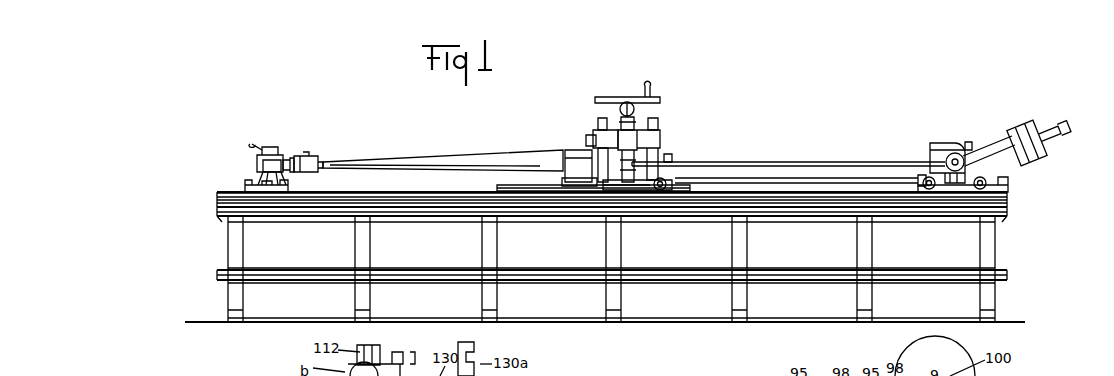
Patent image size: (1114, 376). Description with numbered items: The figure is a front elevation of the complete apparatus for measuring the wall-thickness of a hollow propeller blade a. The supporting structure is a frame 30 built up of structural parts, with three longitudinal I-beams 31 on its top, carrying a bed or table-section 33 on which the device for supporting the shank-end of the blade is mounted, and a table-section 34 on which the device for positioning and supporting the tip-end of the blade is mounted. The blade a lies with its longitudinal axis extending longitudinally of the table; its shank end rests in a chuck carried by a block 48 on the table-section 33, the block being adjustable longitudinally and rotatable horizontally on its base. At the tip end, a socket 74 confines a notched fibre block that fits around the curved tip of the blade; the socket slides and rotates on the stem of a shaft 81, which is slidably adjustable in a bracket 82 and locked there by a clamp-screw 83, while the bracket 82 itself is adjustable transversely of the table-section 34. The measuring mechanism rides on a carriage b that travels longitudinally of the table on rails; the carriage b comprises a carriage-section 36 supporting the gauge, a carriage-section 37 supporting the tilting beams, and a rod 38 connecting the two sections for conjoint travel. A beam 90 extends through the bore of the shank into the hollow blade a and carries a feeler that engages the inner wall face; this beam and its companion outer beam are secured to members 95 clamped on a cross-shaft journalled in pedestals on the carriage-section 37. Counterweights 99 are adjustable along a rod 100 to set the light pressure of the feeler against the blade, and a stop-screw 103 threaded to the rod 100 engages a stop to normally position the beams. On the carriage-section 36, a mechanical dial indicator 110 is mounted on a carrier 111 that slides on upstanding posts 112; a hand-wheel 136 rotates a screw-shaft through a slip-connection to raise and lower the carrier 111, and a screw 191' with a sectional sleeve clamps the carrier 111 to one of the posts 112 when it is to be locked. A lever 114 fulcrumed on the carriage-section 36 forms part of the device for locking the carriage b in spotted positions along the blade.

The frame 30 is at (585, 208).
The longitudinal I-beams 31 is at (668, 202).
The table-section 33 is at (545, 189).
The table-section 34 is at (236, 194).
The carriage-section 36 is at (630, 192).
The carriage-section 37 is at (943, 185).
The rod 38 is at (810, 180).
The block 48 is at (582, 173).
The socket 74 is at (307, 160).
The shaft 81 is at (285, 160).
The bracket 82 is at (262, 180).
The clamp-screw 83 is at (262, 149).
The beam 90 is at (737, 161).
The members 95 is at (956, 152).
The counterweights 99 is at (1022, 126).
The rod 100 is at (1064, 131).
The stop-screw 103 is at (970, 146).
The mechanical dial indicator 110 is at (636, 108).
The carrier 111 is at (660, 138).
The posts 112 is at (657, 125).
The lever 114 is at (672, 157).
The hand-wheel 136 is at (616, 99).
The screw 191' is at (554, 126).
The propeller blade a is at (449, 163).
The carriage b is at (600, 136).